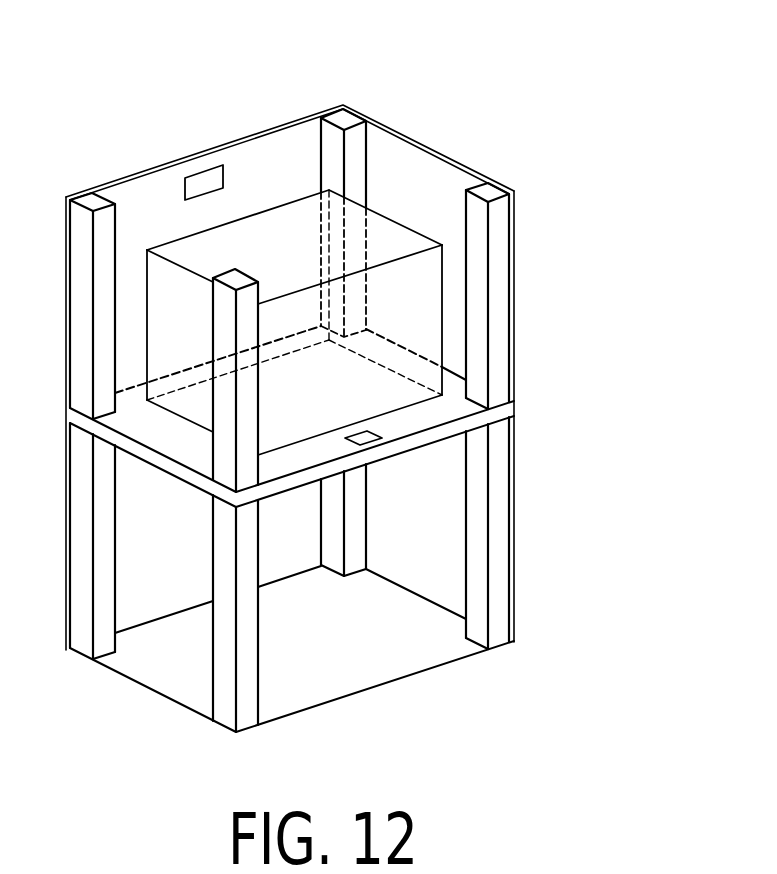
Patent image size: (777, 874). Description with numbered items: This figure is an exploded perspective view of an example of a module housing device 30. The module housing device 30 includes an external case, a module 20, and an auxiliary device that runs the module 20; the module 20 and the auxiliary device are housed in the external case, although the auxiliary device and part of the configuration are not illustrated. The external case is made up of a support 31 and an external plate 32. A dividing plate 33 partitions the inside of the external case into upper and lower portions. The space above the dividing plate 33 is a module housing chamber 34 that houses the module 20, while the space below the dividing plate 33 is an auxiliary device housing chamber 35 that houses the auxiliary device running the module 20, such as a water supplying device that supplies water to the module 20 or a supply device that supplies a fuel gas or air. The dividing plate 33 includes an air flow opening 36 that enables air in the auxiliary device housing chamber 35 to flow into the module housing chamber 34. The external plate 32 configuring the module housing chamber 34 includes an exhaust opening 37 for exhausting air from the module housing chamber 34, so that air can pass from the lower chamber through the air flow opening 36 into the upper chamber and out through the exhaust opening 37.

The module 20 is at (392, 233).
The module housing device 30 is at (240, 62).
The support 31 is at (93, 200).
The external plate 32 is at (382, 126).
The dividing plate 33 is at (498, 413).
The module housing chamber 34 is at (400, 175).
The auxiliary device housing chamber 35 is at (150, 545).
The air flow opening 36 is at (375, 433).
The exhaust opening 37 is at (205, 178).